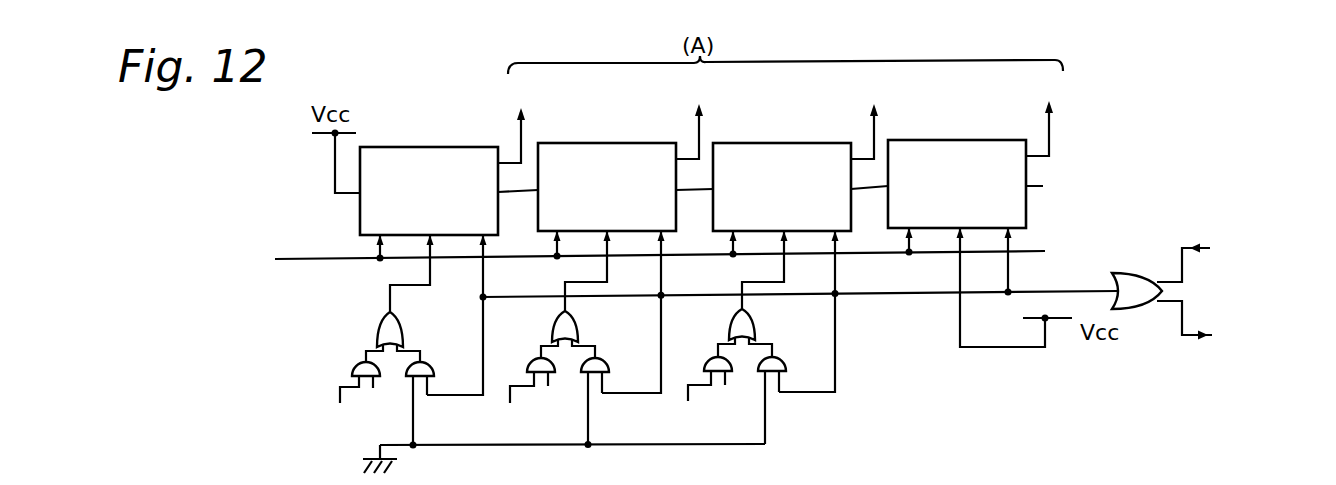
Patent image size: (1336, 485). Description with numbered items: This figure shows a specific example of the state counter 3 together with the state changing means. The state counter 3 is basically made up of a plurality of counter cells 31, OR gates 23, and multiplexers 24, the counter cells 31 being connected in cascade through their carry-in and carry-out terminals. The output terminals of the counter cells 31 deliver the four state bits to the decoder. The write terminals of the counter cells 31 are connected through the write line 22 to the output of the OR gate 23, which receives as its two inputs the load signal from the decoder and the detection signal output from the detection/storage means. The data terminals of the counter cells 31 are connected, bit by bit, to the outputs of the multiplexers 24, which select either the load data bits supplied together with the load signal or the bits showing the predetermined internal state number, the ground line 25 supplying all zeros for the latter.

The state counter 3 is at (735, 157).
The counter cell 31 is at (447, 147).
The write enable line 22 is at (1058, 292).
The OR gate 23 is at (1140, 268).
The multiplexer 24 is at (364, 344).
The ground line 25 is at (510, 446).